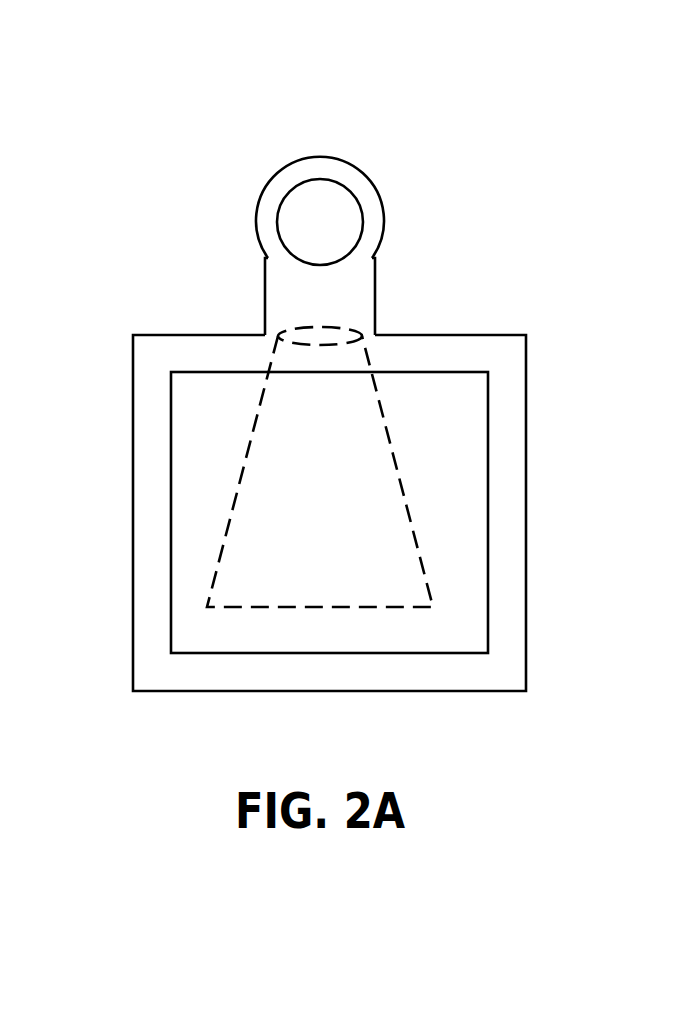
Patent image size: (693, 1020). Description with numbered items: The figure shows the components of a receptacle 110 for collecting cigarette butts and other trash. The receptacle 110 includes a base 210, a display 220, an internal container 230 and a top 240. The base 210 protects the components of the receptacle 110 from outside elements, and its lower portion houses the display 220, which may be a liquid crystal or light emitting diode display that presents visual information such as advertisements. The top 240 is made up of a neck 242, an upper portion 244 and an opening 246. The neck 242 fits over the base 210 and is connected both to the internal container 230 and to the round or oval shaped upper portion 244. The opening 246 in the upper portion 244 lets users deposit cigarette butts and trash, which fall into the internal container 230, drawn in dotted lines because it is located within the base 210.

The receptacle 110 is at (173, 149).
The base 210 is at (527, 390).
The display 220 is at (463, 588).
The internal container 230 is at (265, 466).
The top 240 is at (247, 183).
The neck 242 is at (378, 283).
The upper portion 244 is at (383, 198).
The opening 246 is at (320, 202).